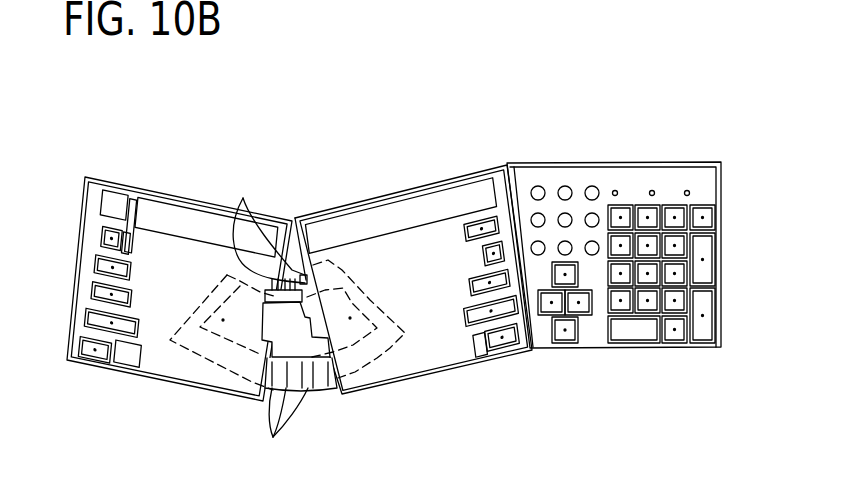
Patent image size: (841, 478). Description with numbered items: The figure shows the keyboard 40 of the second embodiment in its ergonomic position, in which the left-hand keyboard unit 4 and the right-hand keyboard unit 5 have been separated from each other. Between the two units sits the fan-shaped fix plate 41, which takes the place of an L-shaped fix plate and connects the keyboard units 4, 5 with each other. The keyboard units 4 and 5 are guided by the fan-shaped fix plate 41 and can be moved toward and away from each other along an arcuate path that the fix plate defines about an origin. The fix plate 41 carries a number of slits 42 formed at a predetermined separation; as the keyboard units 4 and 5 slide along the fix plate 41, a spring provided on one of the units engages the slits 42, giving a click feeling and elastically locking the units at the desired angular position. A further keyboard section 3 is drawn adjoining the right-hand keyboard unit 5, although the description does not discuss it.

The keyboard main section (ten-key pad) 3 is at (611, 166).
The left-hand keyboard unit 4 is at (152, 189).
The right-hand keyboard unit 5 is at (445, 182).
The keyboard 40 is at (338, 109).
The fan-shaped fix plate 41 is at (384, 352).
The slits 42 is at (270, 320).